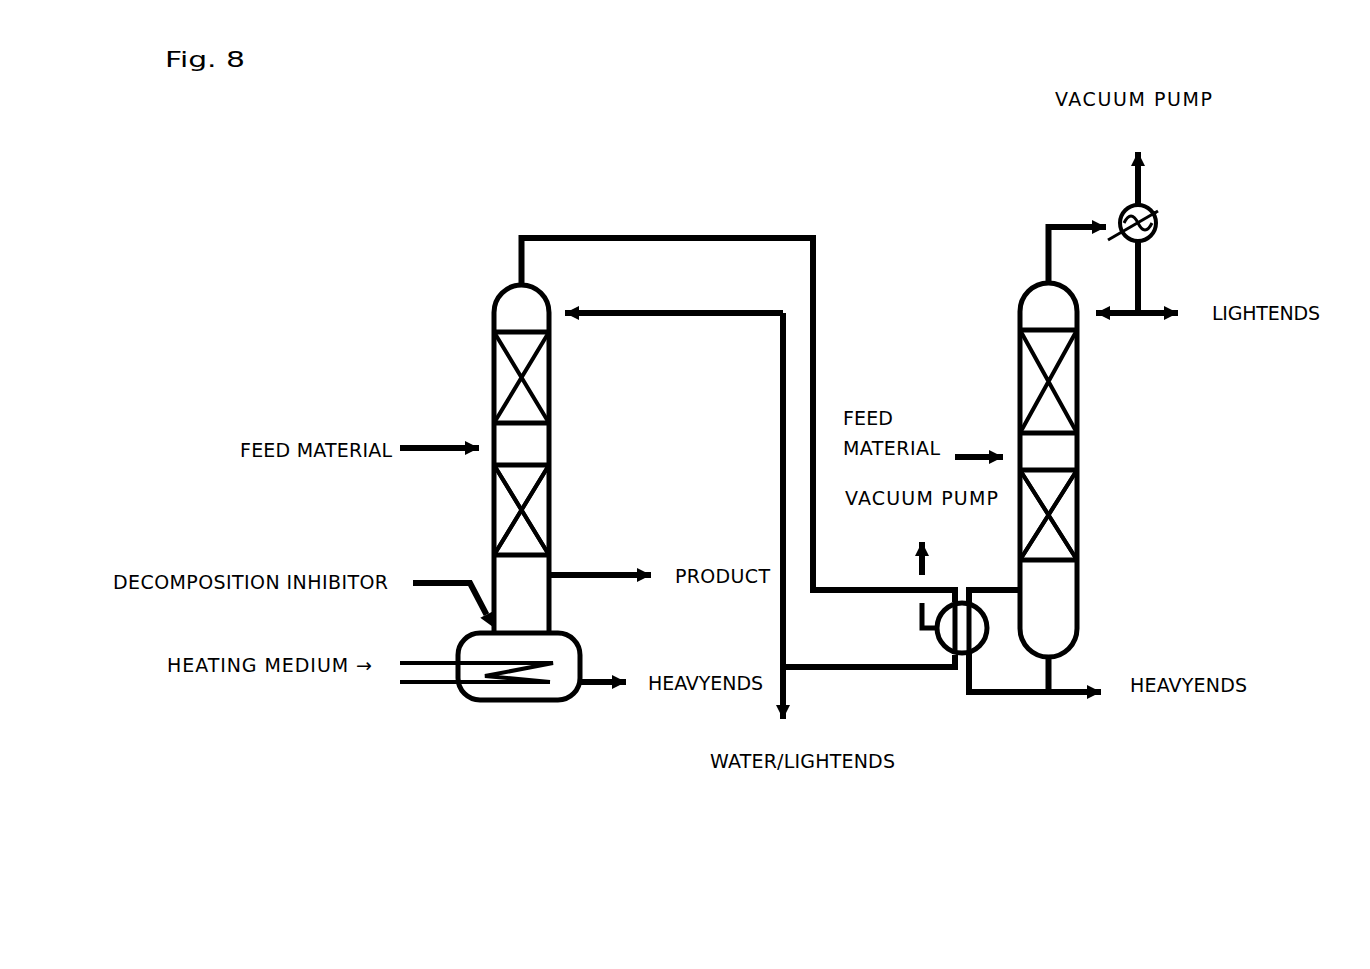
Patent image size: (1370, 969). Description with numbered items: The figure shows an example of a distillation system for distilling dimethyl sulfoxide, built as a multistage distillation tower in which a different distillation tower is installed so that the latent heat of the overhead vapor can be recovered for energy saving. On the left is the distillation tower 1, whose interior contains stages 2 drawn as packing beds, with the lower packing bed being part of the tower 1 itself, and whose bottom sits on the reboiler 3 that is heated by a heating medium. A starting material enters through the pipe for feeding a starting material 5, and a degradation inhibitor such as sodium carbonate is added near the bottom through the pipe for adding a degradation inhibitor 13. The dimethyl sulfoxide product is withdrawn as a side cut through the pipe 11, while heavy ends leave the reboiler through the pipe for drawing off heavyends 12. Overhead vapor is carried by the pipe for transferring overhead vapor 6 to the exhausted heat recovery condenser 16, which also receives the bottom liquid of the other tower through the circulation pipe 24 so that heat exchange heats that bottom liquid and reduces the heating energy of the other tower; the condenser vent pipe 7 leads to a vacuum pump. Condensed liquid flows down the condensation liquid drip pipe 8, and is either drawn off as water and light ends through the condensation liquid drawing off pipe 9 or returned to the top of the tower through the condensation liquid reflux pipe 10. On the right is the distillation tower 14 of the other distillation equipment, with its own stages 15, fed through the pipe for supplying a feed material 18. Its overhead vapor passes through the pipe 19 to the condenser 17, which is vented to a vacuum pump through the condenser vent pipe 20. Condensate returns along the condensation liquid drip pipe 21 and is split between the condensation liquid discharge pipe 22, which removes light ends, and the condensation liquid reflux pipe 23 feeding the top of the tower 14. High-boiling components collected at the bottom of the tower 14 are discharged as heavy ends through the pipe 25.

The distillation tower 1 is at (551, 524).
The stage 2 is at (556, 497).
The reboiler 3 is at (520, 701).
The pipe for feed a starting material 5 is at (442, 440).
The pipe for transferring overhead vapor in a distillation tower to a condenser 6 is at (517, 243).
The condenser vent pipe 7 is at (917, 562).
The condensation liquid drip pipe 8 is at (895, 672).
The condensation liquid drawing off pipe 9 is at (786, 702).
The condensation liquid reflux pipe 10 is at (713, 318).
The pipe for drawing off a dimethyl sulfoxide product via a side cut 11 is at (598, 579).
The pipe for drawing off heavyends 12 is at (603, 690).
The pipe for adding a degradation inhibitor 13 is at (445, 580).
The distillation tower in other distillation equipment 14 is at (1082, 520).
The stage in other distillation equipment 15 is at (1060, 380).
The exhausted heat recovery condenser 16 is at (936, 642).
The condenser in other distillation equipment 17 is at (1150, 206).
The pipe for supplying a feed material in other distillation equipment 18 is at (970, 453).
The pipe for transferring overhead vapor in a distillation tower to a condenser in a 19 is at (1045, 243).
The condenser vent pipe in other distillation equipment 20 is at (1135, 190).
The condensation liquid drip pipe in other distillation equipment 21 is at (1143, 265).
The condensation liquid discharge pipe in other distillation equipment 22 is at (1163, 320).
The condensation liquid reflux pipe in other distillation equipment 23 is at (1110, 318).
The circulation pipe for heating a tower bottom liquid in other distillation equipme 24 is at (1010, 697).
The pipe for discharging high-boiling point components in other distillation equipme 25 is at (1080, 697).